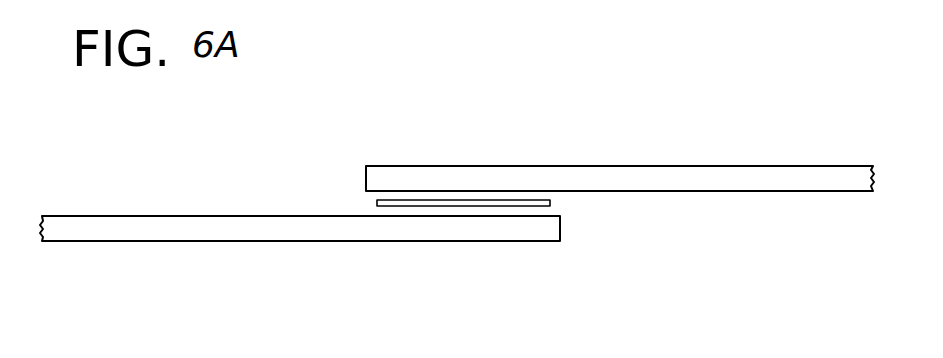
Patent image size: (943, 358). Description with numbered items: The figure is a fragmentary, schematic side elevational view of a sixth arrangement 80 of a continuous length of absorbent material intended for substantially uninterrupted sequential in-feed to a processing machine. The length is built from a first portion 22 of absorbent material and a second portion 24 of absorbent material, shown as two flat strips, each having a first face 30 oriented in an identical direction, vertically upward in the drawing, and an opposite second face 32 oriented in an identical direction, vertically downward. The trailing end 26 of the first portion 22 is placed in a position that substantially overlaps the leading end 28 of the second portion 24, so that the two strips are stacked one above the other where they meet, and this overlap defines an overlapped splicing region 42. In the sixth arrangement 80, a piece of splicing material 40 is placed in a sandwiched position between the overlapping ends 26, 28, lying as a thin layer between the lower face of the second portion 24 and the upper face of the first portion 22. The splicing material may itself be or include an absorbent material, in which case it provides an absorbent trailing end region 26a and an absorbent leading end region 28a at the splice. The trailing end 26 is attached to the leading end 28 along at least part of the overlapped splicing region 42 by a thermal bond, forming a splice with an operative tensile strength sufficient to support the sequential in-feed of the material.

The first portion of absorbent material 22 is at (125, 215).
The second portion of absorbent material 24 is at (813, 163).
The trailing end 26 is at (370, 241).
The absorbent trailing end region 26a is at (550, 202).
The leading end 28 is at (386, 165).
The absorbent leading end region 28a is at (377, 203).
The first face 30 is at (213, 216).
The second face 32 is at (205, 243).
The piece of splicing material 40 is at (480, 200).
The overlapped splicing region 42 is at (524, 250).
The sixth arrangement of a continuous length of absorbent material 80 is at (437, 133).